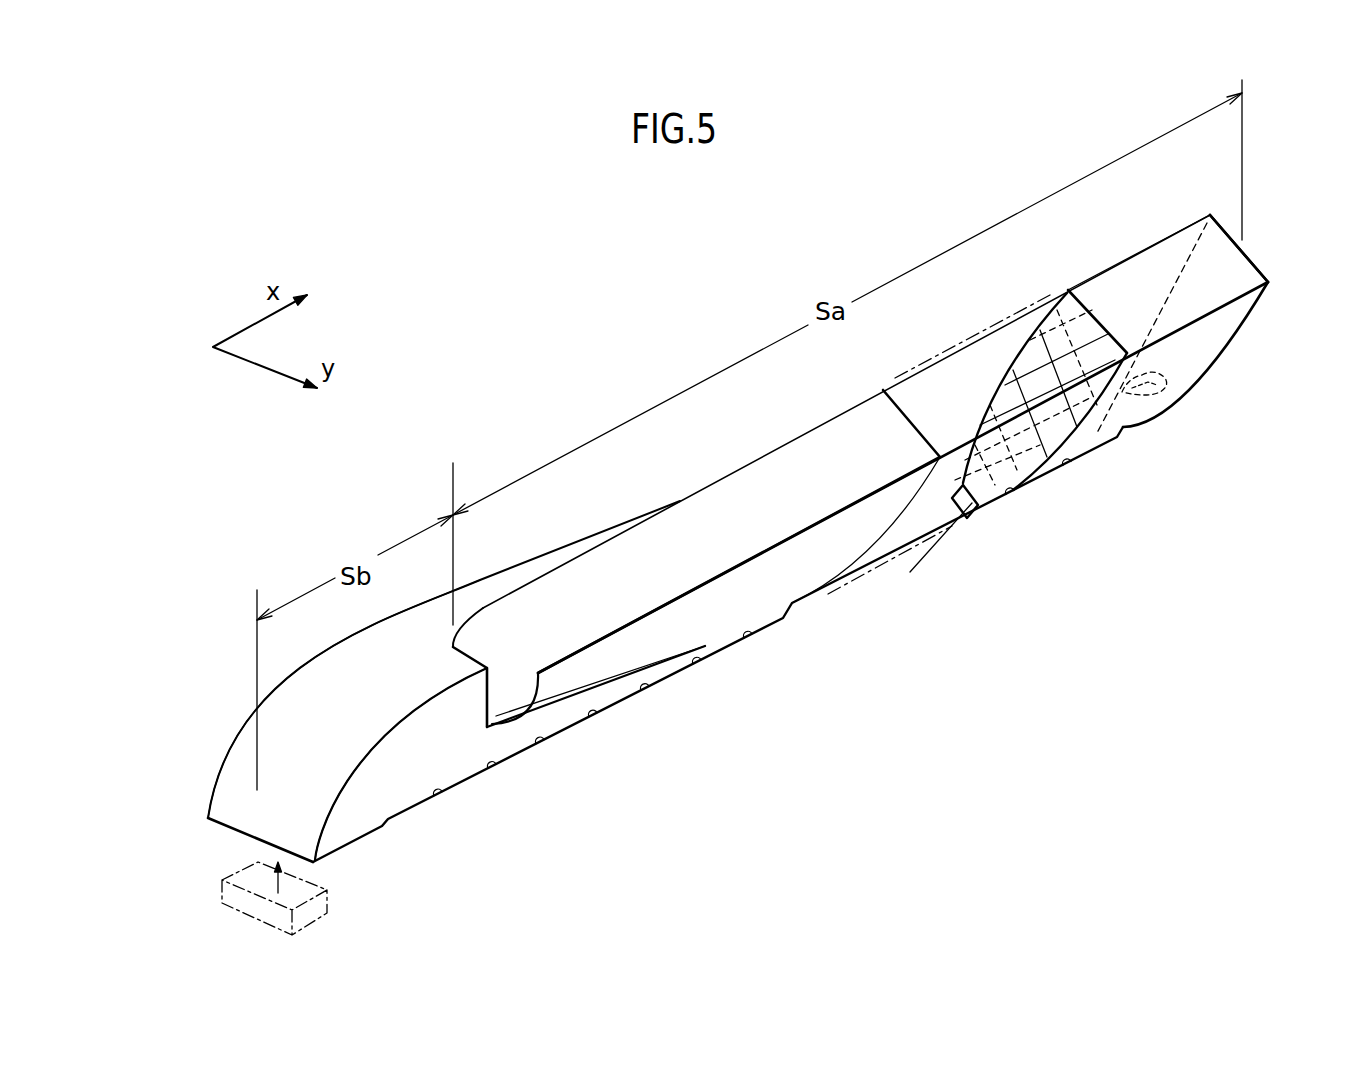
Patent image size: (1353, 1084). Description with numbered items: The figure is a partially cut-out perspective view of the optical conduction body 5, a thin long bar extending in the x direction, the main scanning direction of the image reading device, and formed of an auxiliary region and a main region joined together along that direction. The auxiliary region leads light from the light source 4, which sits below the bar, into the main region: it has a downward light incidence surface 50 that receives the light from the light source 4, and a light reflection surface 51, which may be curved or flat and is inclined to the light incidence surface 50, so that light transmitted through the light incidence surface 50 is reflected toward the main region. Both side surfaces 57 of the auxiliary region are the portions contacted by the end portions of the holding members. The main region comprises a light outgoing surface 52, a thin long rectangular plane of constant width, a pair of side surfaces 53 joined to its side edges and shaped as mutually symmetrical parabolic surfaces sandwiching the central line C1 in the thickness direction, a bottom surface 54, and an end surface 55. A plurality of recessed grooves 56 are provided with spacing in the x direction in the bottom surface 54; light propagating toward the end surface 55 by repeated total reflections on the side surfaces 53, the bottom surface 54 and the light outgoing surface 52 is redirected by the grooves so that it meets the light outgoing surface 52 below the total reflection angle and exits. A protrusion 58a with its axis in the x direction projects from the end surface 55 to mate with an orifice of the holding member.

The light source 4 is at (325, 912).
The optical conduction body 5 is at (555, 392).
The light incidence surface 50 is at (379, 830).
The light reflection surface 51 is at (228, 790).
The light outgoing surface 52 is at (1117, 280).
The side surfaces 53 is at (1022, 358).
The bottom surface 54 is at (955, 520).
The end surface 55 is at (1193, 353).
The recessed grooves 56 is at (594, 718).
The side surfaces of the auxiliary region 57 is at (433, 753).
The protrusion 58a is at (1162, 397).
The central line C1 is at (1090, 300).